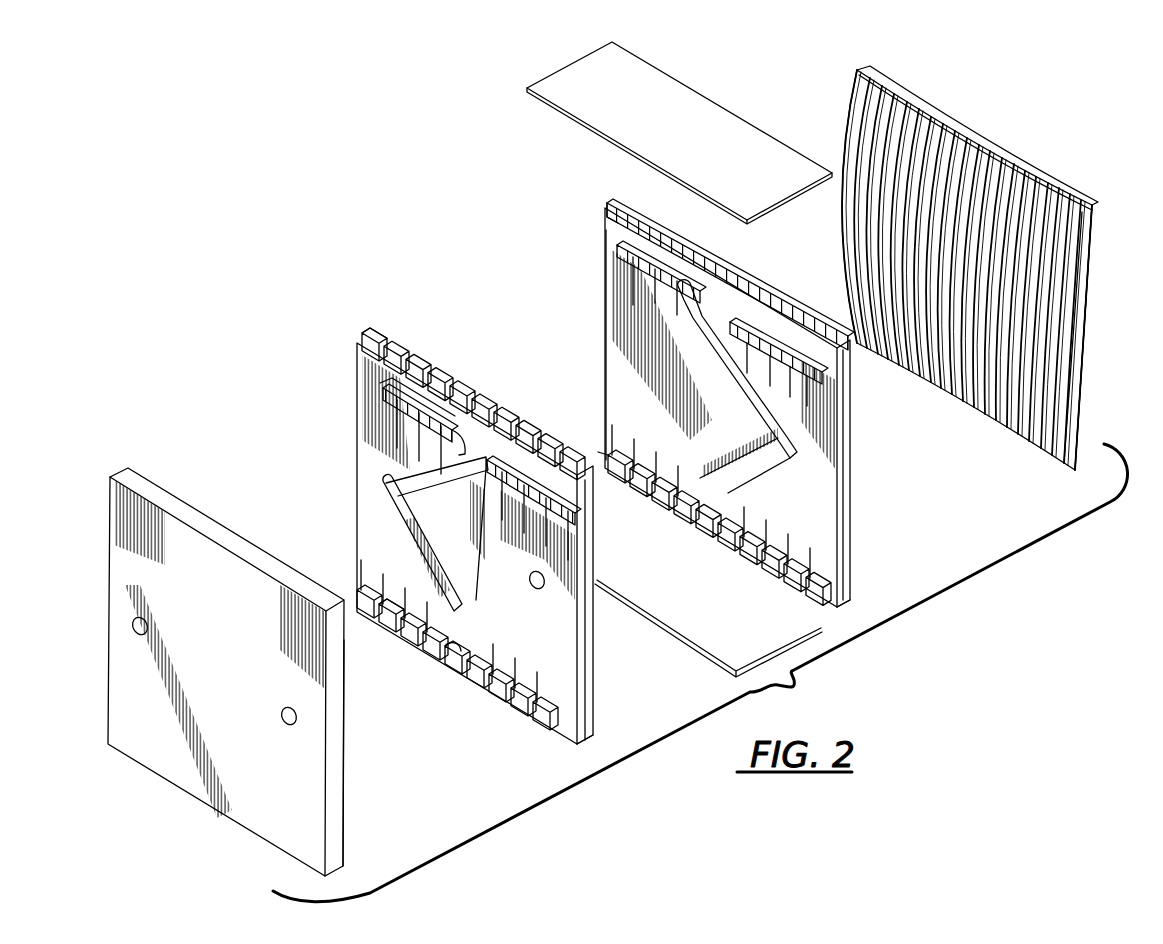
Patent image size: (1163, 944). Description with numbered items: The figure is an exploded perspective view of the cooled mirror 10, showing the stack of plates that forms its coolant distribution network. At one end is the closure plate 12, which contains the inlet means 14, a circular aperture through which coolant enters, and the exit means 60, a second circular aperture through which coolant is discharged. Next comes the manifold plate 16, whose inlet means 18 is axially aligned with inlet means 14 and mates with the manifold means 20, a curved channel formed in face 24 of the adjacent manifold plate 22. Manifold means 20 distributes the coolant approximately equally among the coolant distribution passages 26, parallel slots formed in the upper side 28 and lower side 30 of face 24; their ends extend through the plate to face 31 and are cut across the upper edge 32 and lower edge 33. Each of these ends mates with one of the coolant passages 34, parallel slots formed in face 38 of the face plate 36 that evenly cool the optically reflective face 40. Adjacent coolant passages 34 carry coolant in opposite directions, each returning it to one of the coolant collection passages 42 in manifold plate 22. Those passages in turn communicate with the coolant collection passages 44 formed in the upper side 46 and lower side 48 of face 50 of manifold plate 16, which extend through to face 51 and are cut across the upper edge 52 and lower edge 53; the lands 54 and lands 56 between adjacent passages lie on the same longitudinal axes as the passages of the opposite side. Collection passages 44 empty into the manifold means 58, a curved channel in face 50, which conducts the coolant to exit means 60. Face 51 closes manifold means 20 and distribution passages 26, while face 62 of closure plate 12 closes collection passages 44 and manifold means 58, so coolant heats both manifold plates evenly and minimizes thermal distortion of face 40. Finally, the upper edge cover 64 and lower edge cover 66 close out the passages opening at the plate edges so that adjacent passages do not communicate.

The mirror 10 is at (313, 247).
The closure plate 12 is at (97, 525).
The inlet means 14 is at (296, 718).
The manifold plate 16 is at (345, 510).
The inlet means 18 is at (542, 587).
The manifold means 20 is at (780, 456).
The manifold plate 22 is at (597, 321).
The face 24 is at (612, 386).
The coolant distribution passages 26 is at (838, 410).
The upper side 28 is at (739, 276).
The lower side 30 is at (600, 456).
The face 31 is at (840, 524).
The upper edge 32 is at (636, 222).
The lower edge 33 is at (841, 608).
The coolant passages 34 is at (1040, 242).
The face plate 36 is at (838, 92).
The face 38 is at (1037, 381).
The optically reflective face 40 is at (1083, 338).
The coolant collection passages 42 is at (677, 243).
The coolant collection passages 44 is at (445, 374).
The upper side 46 is at (410, 353).
The lower side 48 is at (441, 656).
The face 50 is at (372, 548).
The face 51 is at (594, 718).
The upper edge 52 is at (397, 334).
The lower edge 53 is at (578, 746).
The lands 54 is at (394, 624).
The lands 56 is at (386, 369).
The manifold means 58 is at (384, 486).
The exit means 60 is at (134, 621).
The face 62 is at (344, 814).
The upper edge cover 64 is at (559, 81).
The lower edge cover 66 is at (729, 665).